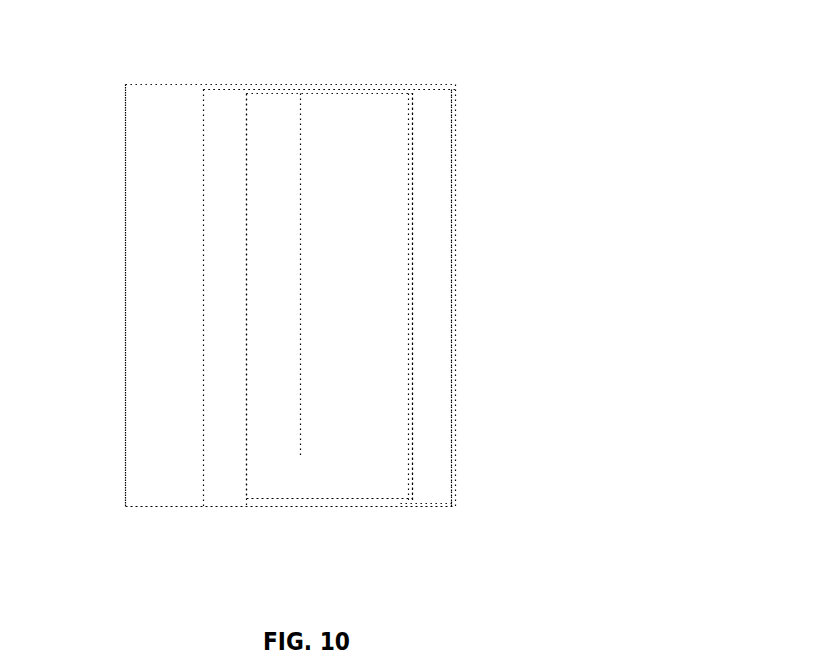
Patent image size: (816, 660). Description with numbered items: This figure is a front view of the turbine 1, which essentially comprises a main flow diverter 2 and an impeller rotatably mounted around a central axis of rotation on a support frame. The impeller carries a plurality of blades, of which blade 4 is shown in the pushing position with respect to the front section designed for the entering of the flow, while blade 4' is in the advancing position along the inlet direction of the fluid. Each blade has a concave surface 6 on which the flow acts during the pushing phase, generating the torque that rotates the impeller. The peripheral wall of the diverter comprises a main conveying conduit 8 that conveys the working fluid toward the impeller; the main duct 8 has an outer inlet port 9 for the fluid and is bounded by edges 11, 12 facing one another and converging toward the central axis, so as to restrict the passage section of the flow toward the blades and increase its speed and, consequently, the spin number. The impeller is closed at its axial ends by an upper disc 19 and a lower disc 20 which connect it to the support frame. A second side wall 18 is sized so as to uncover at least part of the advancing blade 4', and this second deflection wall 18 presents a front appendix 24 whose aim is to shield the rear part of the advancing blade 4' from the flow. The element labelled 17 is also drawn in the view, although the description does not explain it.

The turbine 1 is at (612, 185).
The main flow diverter 2 is at (110, 110).
The blade 4 is at (291, 519).
The blade 4' is at (286, 276).
The concave surface 6 is at (358, 298).
The main conveying conduit 8 is at (384, 367).
The outer inlet port 9 is at (400, 505).
The edge 11 is at (413, 272).
The edge 12 is at (247, 470).
The conductor 17 is at (447, 180).
The second side wall 18 is at (235, 282).
The upper disc 19 is at (388, 90).
The lower disc 20 is at (410, 501).
The front appendix 24 is at (155, 347).